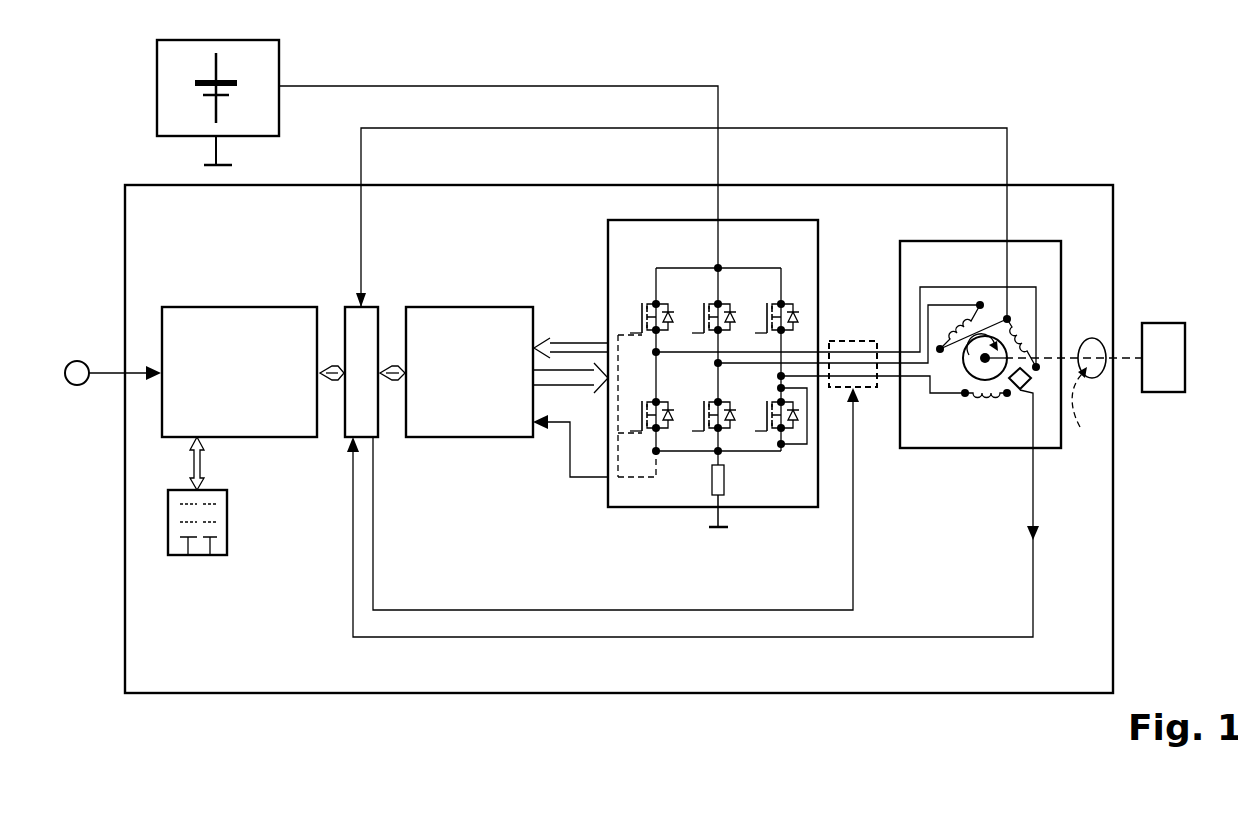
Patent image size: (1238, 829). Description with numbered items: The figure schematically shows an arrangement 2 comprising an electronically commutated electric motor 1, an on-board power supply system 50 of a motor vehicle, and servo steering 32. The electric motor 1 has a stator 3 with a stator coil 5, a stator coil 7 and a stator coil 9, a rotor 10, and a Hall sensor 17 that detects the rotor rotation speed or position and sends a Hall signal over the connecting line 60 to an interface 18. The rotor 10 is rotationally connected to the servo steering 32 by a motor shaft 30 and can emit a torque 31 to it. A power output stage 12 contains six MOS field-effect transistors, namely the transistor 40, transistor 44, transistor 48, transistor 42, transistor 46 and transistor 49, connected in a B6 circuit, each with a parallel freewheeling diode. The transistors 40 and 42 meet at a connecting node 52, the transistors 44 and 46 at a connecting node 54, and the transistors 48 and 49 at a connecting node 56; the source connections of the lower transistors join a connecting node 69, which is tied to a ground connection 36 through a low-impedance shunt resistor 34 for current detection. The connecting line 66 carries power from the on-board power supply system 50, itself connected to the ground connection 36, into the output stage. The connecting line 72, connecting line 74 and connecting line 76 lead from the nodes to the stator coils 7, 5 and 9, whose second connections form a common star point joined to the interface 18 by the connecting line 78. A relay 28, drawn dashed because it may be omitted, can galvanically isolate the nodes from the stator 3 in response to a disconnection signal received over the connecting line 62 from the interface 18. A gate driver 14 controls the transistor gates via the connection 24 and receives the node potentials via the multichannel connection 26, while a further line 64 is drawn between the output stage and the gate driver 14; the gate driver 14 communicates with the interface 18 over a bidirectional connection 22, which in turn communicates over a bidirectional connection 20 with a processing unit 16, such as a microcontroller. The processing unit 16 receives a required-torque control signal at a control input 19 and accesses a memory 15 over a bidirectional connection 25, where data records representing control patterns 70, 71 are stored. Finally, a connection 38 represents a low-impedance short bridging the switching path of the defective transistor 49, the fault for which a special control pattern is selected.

The electronically commutated electric motor 1 is at (1043, 185).
The arrangement 2 is at (957, 102).
The stator 3 is at (1052, 241).
The stator coil 5 is at (958, 318).
The stator coil 7 is at (1015, 316).
The stator coil 9 is at (980, 398).
The rotor 10 is at (968, 365).
The power output stage 12 is at (800, 220).
The gate driver 14 is at (455, 318).
The memory 15 is at (227, 527).
The processing unit 16 is at (213, 318).
The Hall sensor 17 is at (1020, 390).
The interface 18 is at (368, 418).
The control input 19 is at (77, 361).
The bidirectional connection 20 is at (332, 364).
The bidirectional connection 22 is at (393, 364).
The connection 24 is at (588, 372).
The bidirectional connection 25 is at (200, 464).
The multichannel connection 26 is at (537, 340).
The relay 28 is at (851, 340).
The motor shaft 30 is at (1083, 410).
The torque 31 is at (1092, 338).
The servo steering 32 is at (1158, 323).
The resistor 34 is at (713, 490).
The ground connection 36 is at (205, 165).
The connection 38 is at (800, 445).
The transistor 40 is at (642, 333).
The transistor 42 is at (642, 431).
The transistor 44 is at (704, 333).
The transistor 46 is at (704, 431).
The transistor 48 is at (767, 333).
The transistor 49 is at (767, 431).
The on-board power supply system 50 is at (259, 67).
The connecting node 52 is at (618, 395).
The connecting node 54 is at (716, 364).
The connecting node 56 is at (779, 377).
The connecting line 60 is at (925, 637).
The connecting line 62 is at (373, 578).
The feedback line 64 is at (568, 462).
The connecting line 66 is at (553, 86).
The connecting node 69 is at (717, 452).
The control pattern 70 is at (188, 555).
The control pattern 71 is at (210, 555).
The connecting line 72 is at (890, 352).
The connecting line 74 is at (890, 364).
The connecting line 76 is at (893, 378).
The connecting line 78 is at (757, 128).